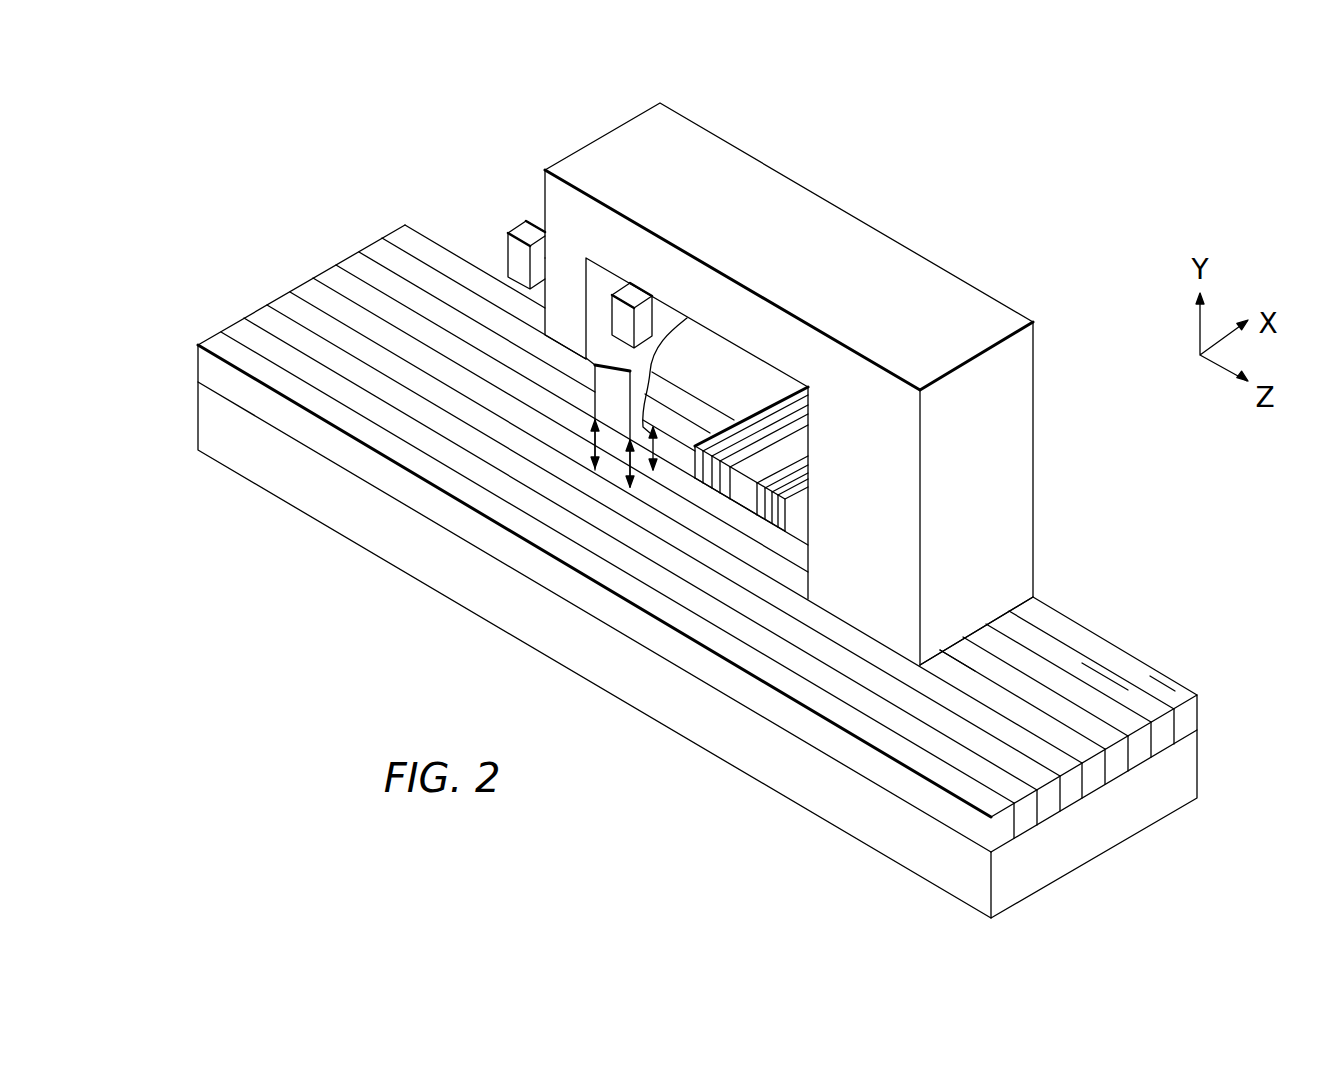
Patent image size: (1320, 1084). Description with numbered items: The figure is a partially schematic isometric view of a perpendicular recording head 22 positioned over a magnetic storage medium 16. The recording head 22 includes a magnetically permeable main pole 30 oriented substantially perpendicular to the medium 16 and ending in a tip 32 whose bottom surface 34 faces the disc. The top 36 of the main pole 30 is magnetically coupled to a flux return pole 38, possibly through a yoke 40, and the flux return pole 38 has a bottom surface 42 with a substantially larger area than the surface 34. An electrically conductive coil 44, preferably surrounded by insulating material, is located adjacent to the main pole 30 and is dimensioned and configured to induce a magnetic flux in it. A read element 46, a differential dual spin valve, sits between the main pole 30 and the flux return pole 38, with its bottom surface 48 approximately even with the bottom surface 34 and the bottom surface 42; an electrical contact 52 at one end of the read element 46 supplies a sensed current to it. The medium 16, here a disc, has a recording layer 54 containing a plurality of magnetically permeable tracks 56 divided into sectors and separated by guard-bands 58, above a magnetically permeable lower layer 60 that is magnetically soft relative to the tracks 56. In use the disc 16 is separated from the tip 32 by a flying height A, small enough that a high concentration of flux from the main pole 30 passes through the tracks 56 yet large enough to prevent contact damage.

The magnetic storage medium 16 is at (316, 233).
The recording head 22 is at (1011, 213).
The main pole 30 is at (548, 313).
The tip 32 is at (599, 409).
The bottom surface 34 is at (655, 373).
The top 36 is at (552, 238).
The flux return pole 38 is at (965, 494).
The yoke 40 is at (699, 313).
The bottom surface 42 is at (971, 652).
The electrically conductive coil 44 is at (513, 257).
The read element 46 is at (758, 462).
The bottom surface 48 is at (735, 506).
The electrical contact 52 is at (775, 425).
The recording layer 54 is at (1207, 710).
The tracks 56 is at (1163, 685).
The guard-bands 58 is at (1100, 675).
The lower layer 60 is at (1207, 766).